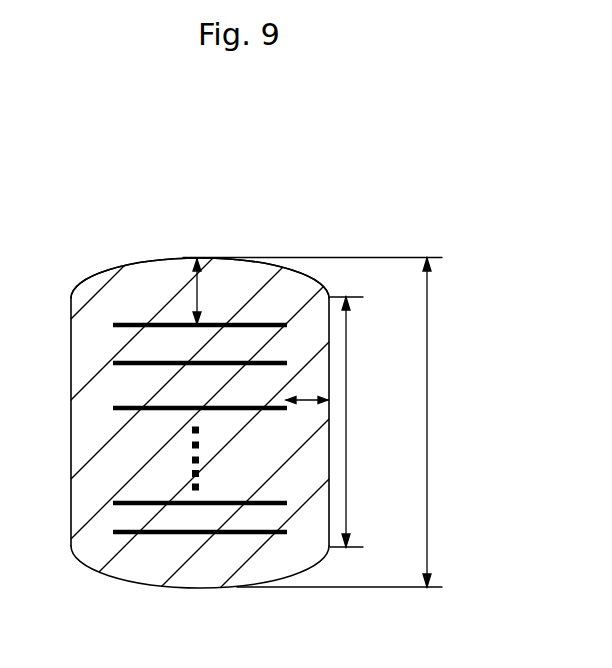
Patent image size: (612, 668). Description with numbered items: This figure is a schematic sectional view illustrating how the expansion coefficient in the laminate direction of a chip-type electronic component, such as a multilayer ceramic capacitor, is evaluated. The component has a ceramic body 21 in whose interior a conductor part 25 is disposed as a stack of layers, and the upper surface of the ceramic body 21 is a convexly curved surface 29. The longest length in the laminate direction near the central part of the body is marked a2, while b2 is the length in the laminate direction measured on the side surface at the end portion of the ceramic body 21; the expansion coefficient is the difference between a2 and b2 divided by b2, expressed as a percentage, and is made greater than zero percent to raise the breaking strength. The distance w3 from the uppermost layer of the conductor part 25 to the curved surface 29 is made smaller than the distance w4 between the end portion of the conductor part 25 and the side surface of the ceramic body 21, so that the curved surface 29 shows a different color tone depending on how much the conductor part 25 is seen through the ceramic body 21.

The ceramic body 21 is at (170, 250).
The conductor part 25 is at (135, 324).
The convexly curved surface 29 is at (134, 260).
The distance from uppermost conductor layer to curved surface w3 is at (199, 291).
The distance from conductor end portion to side surface w4 is at (305, 400).
The longest length in laminate direction a2 is at (330, 423).
The length in laminate direction at side surface b2 is at (365, 422).